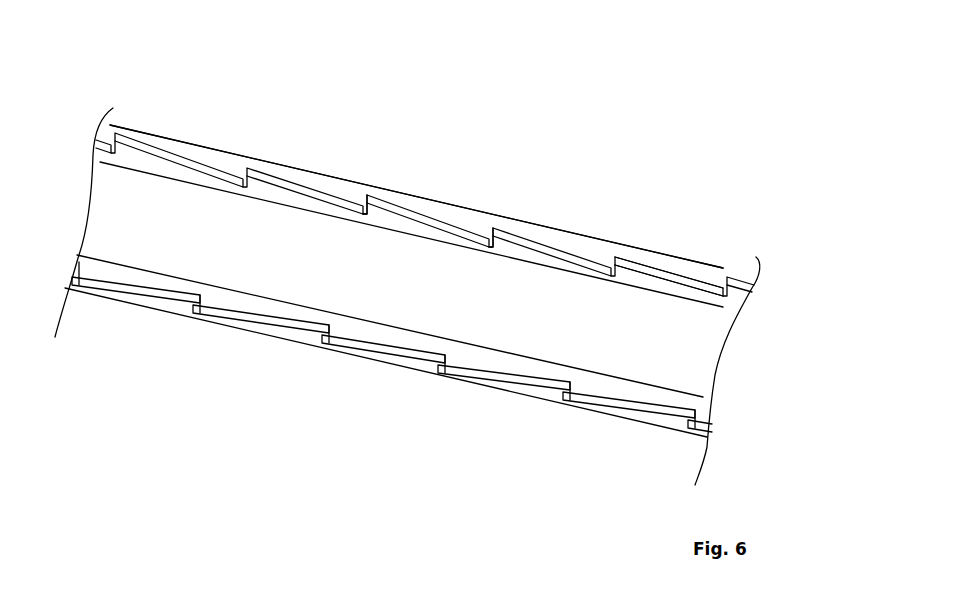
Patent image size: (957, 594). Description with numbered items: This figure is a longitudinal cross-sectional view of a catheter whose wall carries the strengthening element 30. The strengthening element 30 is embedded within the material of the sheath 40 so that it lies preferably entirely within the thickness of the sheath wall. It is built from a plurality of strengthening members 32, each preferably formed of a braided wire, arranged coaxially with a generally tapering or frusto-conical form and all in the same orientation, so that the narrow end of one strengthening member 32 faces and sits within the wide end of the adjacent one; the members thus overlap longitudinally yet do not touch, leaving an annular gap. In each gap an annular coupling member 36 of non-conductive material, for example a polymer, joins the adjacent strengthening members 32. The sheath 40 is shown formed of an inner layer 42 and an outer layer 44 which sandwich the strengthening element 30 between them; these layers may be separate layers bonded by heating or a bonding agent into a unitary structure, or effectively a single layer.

The strengthening element 30 is at (590, 270).
The strengthening member 32 is at (313, 183).
The annular coupling member 36 is at (362, 193).
The sheath 40 is at (177, 143).
The inner layer 42 is at (690, 290).
The outer layer 44 is at (675, 270).